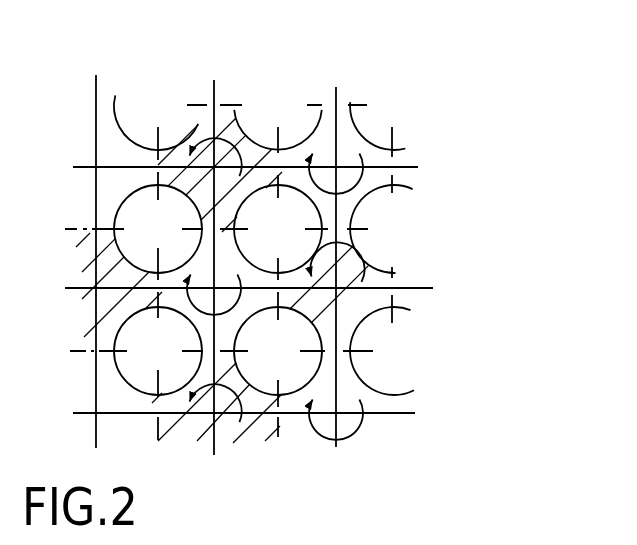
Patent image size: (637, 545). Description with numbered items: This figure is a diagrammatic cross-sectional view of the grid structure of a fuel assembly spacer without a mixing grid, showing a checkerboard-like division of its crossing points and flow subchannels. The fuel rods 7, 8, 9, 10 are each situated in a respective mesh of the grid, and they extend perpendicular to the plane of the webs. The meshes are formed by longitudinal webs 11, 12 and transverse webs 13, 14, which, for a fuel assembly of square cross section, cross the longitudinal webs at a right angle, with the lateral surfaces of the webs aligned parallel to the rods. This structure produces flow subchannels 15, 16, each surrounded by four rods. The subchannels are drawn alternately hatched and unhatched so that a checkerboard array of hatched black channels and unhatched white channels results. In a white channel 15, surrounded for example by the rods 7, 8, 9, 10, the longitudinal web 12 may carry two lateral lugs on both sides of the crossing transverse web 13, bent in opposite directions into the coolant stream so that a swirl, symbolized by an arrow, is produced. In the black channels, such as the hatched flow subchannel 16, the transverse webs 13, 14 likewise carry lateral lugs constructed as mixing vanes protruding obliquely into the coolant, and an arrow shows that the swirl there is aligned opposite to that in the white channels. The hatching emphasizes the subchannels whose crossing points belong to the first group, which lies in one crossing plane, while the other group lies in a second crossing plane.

The fuel rod 7 is at (407, 200).
The fuel rod 8 is at (253, 150).
The fuel rod 9 is at (310, 124).
The fuel rod 10 is at (398, 132).
The longitudinal web 11 is at (415, 413).
The longitudinal web 12 is at (422, 284).
The transverse web 13 is at (215, 80).
The transverse web 14 is at (337, 87).
The flow subchannel 15 is at (353, 120).
The flow subchannel 16 is at (200, 125).